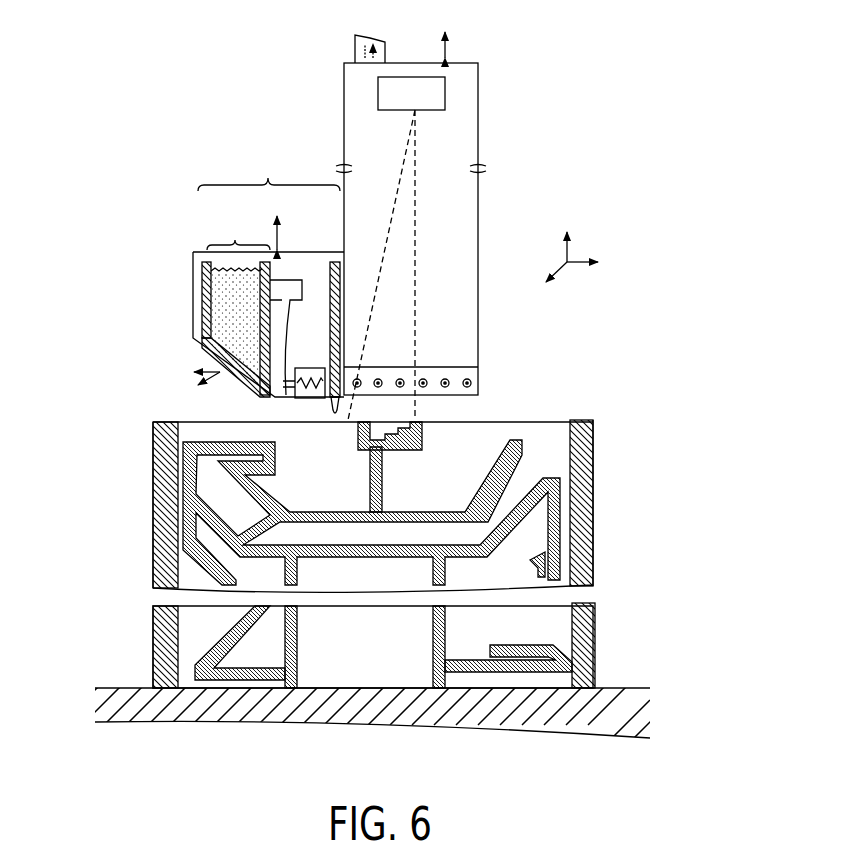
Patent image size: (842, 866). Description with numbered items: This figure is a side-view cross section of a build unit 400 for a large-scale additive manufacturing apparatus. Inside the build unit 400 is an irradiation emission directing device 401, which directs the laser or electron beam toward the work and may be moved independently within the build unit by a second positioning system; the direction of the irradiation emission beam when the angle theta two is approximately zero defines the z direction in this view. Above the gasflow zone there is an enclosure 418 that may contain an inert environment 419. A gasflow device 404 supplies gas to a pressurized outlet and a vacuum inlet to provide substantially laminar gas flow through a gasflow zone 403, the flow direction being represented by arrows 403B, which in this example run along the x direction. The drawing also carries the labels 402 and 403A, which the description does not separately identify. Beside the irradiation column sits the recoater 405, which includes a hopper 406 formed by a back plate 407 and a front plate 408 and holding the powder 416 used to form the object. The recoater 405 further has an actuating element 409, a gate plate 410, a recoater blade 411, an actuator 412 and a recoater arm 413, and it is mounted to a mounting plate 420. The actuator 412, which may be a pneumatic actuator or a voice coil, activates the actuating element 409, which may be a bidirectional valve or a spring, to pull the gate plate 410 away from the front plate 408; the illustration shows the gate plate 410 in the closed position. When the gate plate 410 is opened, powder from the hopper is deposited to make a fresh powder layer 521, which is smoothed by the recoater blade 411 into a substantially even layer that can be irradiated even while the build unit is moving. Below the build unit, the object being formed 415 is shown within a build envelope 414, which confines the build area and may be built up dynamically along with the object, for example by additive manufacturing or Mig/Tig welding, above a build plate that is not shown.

The build unit 400 is at (362, 378).
The irradiation emission directing device 401 is at (405, 82).
The energy beam 402 is at (418, 216).
The gasflow zone 403 is at (420, 371).
The first nozzle group 403A is at (472, 366).
The gas flow direction arrows 403B is at (418, 380).
The gasflow device 404 is at (424, 378).
The recoater 405 is at (234, 312).
The hopper 406 is at (223, 293).
The back plate 407 is at (200, 330).
The front plate 408 is at (276, 279).
The actuating element 409 is at (293, 322).
The gate plate 410 is at (275, 400).
The recoater blade 411 is at (335, 418).
The actuator 412 is at (307, 367).
The recoater arm 413 is at (334, 262).
The build envelope 414 is at (366, 550).
The object being built 415 is at (523, 445).
The powder 416 is at (217, 266).
The enclosure 418 is at (344, 112).
The inert environment 419 is at (360, 142).
The mounting plate 420 is at (234, 297).
The fresh powder layer 521 is at (183, 421).